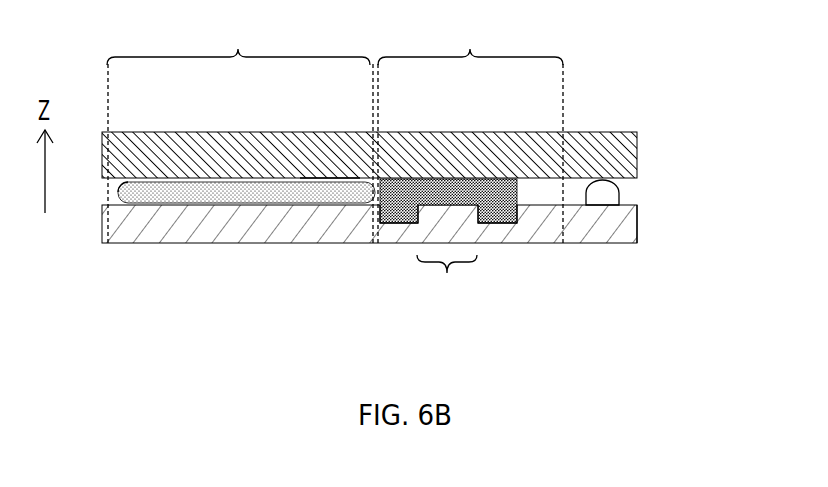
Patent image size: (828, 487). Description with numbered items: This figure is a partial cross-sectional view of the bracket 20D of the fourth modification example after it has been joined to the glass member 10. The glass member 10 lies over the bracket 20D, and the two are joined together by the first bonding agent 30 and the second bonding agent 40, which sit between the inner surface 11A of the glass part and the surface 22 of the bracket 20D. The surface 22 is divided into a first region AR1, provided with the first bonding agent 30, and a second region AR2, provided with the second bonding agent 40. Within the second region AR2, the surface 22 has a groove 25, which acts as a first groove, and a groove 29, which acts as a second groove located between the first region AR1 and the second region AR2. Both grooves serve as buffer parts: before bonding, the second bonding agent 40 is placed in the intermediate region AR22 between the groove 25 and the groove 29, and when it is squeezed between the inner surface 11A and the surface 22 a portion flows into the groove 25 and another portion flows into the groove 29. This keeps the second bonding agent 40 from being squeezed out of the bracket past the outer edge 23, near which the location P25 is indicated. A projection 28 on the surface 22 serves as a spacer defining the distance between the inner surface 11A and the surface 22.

The glass member 10 is at (247, 148).
The surface 22 is at (283, 202).
The first bonding agent 30 is at (148, 196).
The bracket 20D is at (199, 230).
The inner surface 11A is at (327, 178).
The second bonding agent 40 is at (458, 178).
The groove 29 is at (402, 208).
The groove 25 is at (509, 210).
The terminal position P25 is at (545, 224).
The projection 28 is at (600, 196).
The outer edge 23 is at (635, 221).
The first region AR1 is at (238, 39).
The second region AR2 is at (470, 39).
The intermediate region AR22 is at (447, 281).